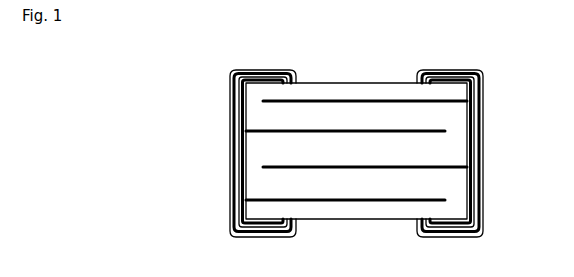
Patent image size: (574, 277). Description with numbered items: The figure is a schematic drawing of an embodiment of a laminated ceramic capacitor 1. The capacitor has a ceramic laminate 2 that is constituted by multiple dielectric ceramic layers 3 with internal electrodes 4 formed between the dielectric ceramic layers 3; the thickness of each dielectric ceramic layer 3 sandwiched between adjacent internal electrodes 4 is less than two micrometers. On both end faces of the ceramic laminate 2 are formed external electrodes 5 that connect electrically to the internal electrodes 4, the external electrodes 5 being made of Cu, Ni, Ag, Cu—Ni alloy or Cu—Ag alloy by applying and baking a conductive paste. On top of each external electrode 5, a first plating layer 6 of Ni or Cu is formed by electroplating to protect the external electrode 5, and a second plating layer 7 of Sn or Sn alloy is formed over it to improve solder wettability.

The laminated ceramic capacitor 1 is at (353, 144).
The ceramic laminate 2 is at (400, 84).
The dielectric ceramic layer 3 is at (262, 147).
The internal electrode 4 is at (430, 167).
The external electrode 5 is at (243, 200).
The first plating layer 6 is at (467, 165).
The second plating layer 7 is at (482, 200).